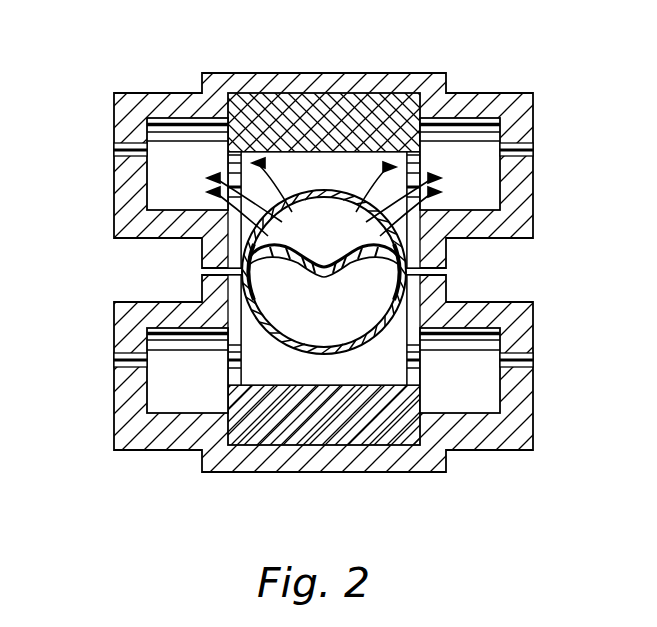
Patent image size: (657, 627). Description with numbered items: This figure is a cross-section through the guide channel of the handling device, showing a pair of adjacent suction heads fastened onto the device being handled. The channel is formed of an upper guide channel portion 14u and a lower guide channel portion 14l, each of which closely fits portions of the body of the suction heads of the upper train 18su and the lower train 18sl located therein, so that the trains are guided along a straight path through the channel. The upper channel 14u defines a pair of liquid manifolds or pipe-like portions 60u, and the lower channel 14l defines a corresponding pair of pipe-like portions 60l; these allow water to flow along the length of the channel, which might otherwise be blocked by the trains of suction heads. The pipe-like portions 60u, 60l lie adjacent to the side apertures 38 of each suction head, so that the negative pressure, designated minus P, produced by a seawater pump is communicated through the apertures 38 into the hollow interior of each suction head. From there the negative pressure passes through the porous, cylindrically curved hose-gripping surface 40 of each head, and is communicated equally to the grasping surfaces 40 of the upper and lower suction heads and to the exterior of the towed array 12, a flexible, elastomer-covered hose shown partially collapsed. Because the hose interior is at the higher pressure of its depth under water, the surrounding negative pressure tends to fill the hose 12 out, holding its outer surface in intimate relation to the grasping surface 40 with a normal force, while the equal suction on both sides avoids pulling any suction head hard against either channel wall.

The towed array 12 is at (335, 337).
The upper guide channel portion 14u is at (493, 95).
The lower guide channel portion 14l is at (490, 451).
The upper suction head train 18su is at (329, 88).
The lower suction head train 18sl is at (333, 460).
The apertures 38 is at (240, 168).
The hose-gripping surface 40 is at (325, 197).
The upper pipe-like portions 60u is at (153, 164).
The lower pipe-like portions 60l is at (153, 383).